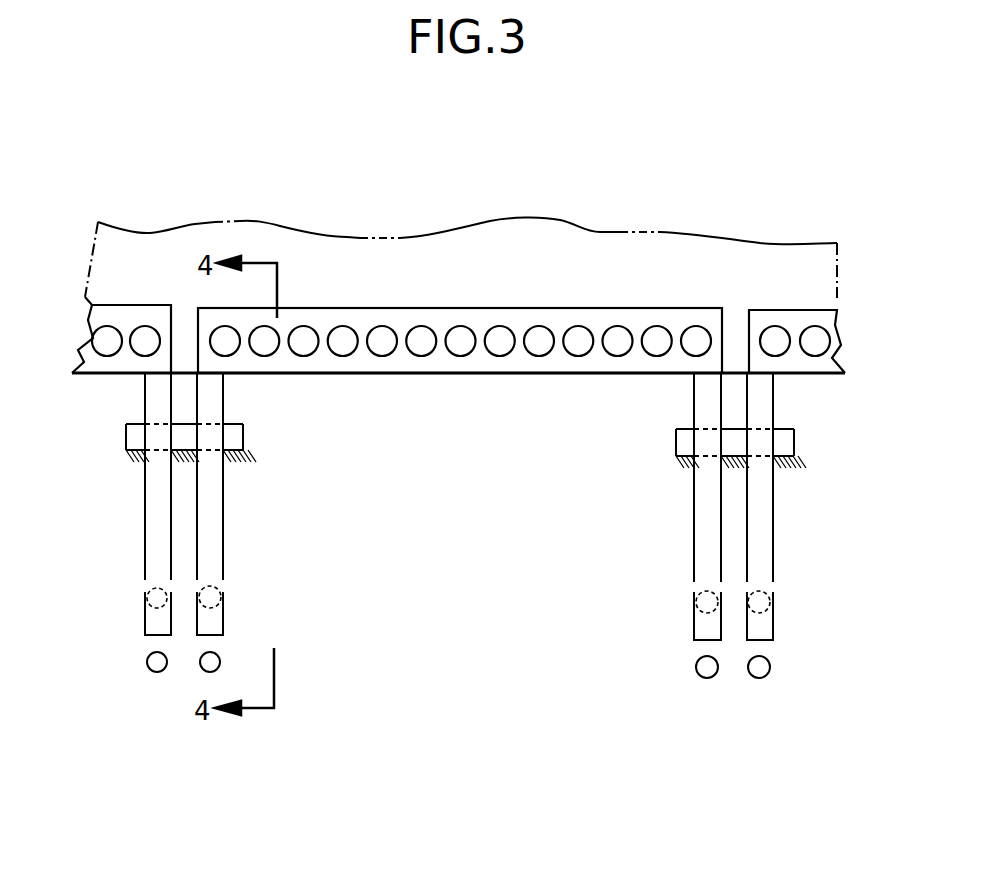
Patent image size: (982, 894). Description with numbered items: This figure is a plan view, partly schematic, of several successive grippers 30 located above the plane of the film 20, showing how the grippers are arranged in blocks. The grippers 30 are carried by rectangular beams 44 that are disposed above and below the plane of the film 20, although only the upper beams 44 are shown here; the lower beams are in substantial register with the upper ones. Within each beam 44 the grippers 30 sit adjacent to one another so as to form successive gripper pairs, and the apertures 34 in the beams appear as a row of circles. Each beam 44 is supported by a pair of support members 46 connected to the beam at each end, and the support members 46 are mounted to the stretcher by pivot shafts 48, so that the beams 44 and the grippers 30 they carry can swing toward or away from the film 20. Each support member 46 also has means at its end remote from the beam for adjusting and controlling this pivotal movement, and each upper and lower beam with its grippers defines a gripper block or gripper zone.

The film 20 is at (460, 253).
The grippers 30 is at (516, 691).
The apertures 34 is at (145, 342).
The rectangular beams 44 is at (155, 303).
The support members 46 is at (197, 537).
The pivot shafts 48 is at (230, 423).